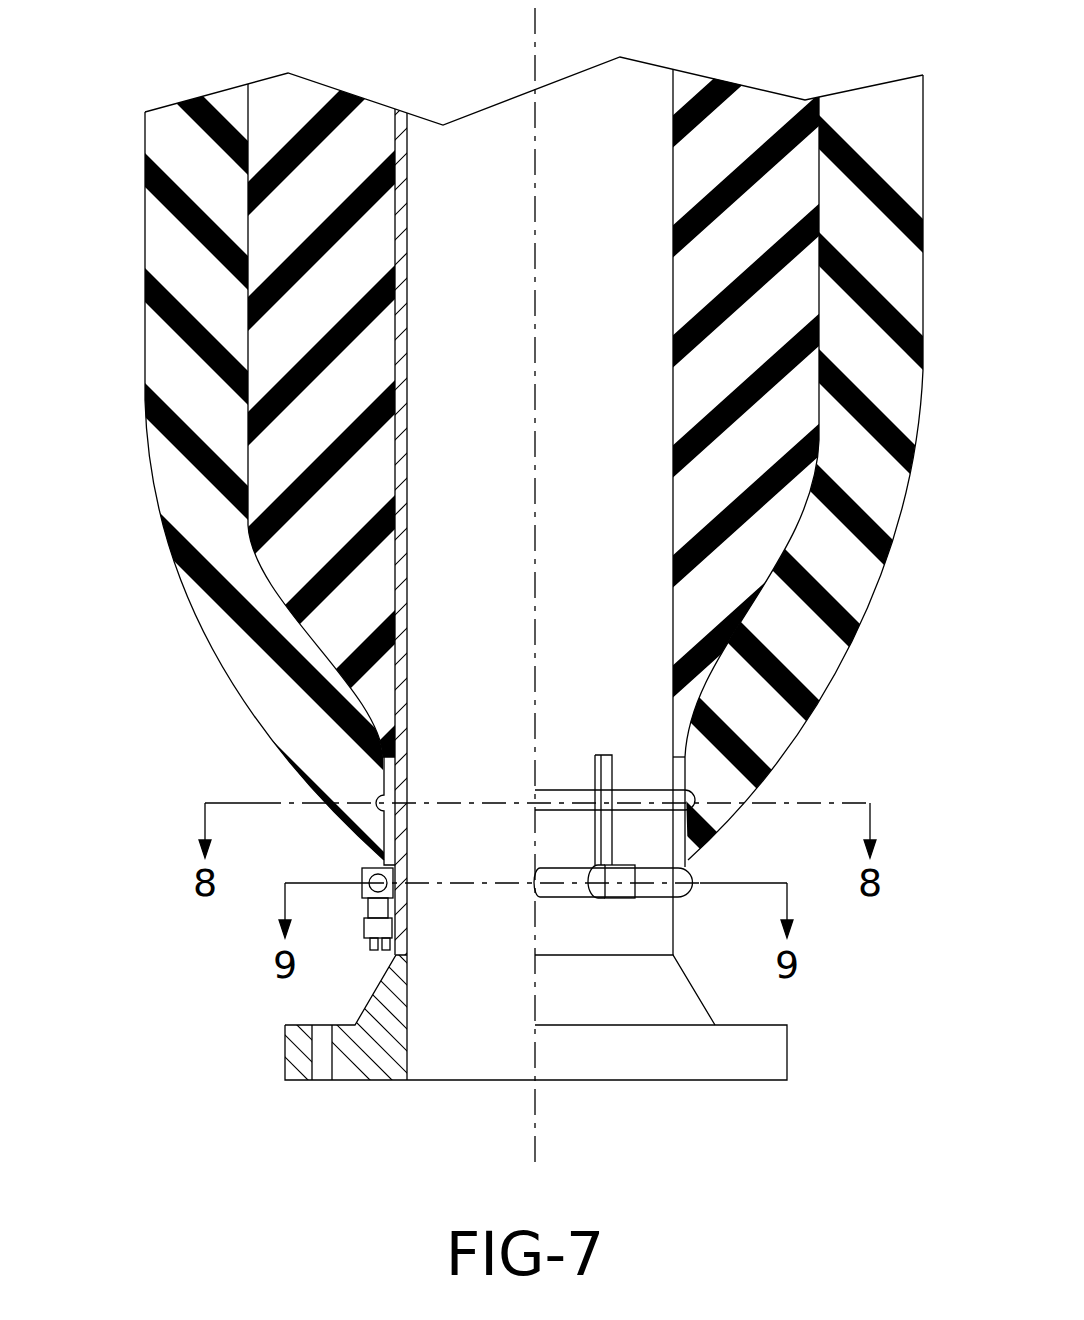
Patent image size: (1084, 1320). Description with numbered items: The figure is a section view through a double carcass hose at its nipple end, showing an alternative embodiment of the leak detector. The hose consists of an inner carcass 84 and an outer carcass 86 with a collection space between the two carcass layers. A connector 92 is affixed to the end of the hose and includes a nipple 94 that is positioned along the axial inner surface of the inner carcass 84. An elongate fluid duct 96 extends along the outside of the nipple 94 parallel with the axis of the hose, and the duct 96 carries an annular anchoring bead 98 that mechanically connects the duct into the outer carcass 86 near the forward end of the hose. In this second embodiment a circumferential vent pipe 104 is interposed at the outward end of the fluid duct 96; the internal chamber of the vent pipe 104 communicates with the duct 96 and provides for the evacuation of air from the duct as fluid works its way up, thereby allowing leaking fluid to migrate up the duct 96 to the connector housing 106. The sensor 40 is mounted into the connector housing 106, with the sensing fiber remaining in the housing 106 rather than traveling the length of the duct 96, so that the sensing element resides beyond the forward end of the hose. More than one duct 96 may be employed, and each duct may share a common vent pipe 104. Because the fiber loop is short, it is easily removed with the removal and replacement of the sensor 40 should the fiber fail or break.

The sensor 40 is at (356, 952).
The inner carcass 84 is at (722, 133).
The outer carcass 86 is at (200, 482).
The connector 92 is at (798, 1046).
The nipple 94 is at (402, 167).
The fluid duct 96 is at (367, 797).
The annular anchoring bead 98 is at (380, 790).
The circumferential vent pipe 104 is at (550, 888).
The connector housing 106 is at (362, 876).